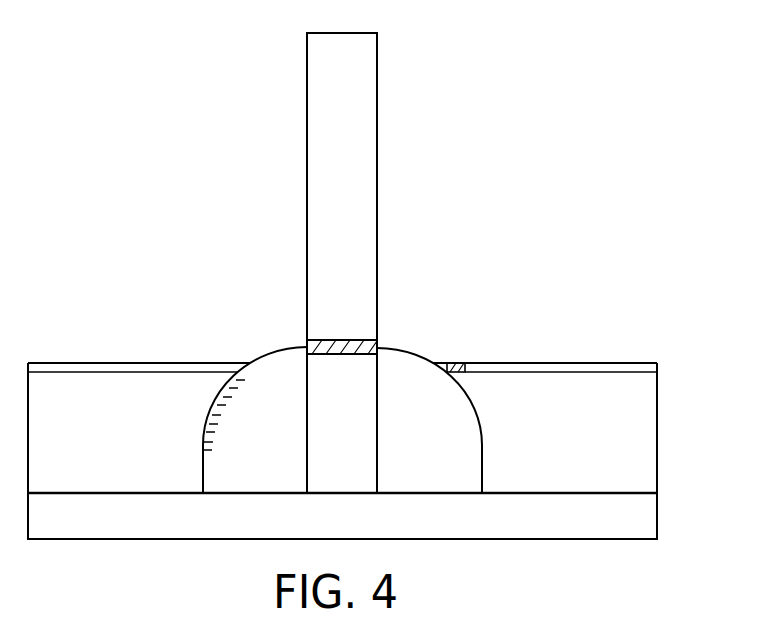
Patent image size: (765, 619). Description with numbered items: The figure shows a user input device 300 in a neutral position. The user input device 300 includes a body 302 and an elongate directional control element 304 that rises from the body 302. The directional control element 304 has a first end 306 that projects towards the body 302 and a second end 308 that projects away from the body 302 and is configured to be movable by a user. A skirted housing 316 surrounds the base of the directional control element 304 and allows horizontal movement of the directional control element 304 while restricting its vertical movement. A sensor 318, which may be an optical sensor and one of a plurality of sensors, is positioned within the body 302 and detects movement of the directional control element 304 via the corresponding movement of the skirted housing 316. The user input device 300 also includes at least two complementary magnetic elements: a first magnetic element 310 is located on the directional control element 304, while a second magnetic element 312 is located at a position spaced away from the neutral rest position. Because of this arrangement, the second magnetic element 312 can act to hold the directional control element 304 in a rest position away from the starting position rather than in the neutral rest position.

The user input device 300 is at (558, 53).
The body 302 is at (612, 363).
The directional control element 304 is at (400, 202).
The first end 306 is at (378, 388).
The second end 308 is at (377, 75).
The first magnetic element 310 is at (307, 340).
The second magnetic element 312 is at (448, 363).
The skirted housing 316 is at (481, 425).
The sensor 318 is at (205, 417).